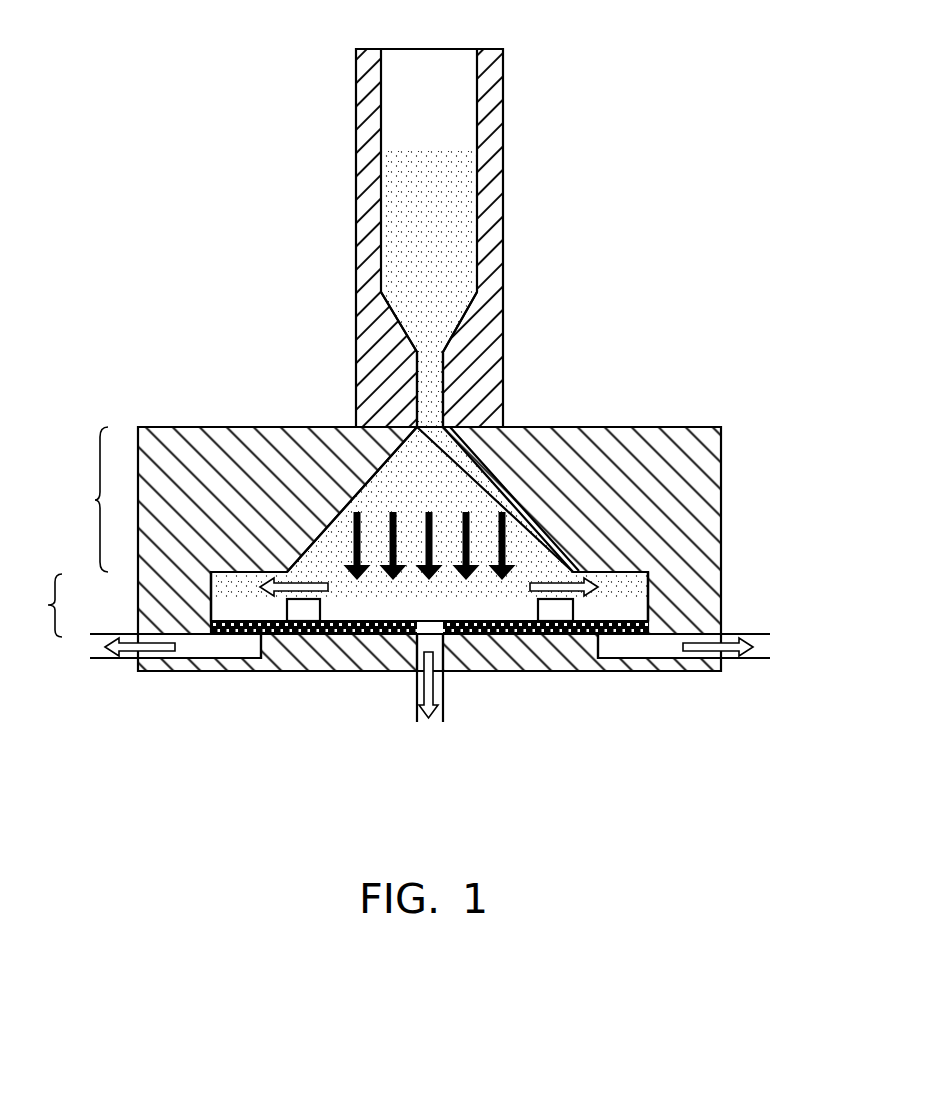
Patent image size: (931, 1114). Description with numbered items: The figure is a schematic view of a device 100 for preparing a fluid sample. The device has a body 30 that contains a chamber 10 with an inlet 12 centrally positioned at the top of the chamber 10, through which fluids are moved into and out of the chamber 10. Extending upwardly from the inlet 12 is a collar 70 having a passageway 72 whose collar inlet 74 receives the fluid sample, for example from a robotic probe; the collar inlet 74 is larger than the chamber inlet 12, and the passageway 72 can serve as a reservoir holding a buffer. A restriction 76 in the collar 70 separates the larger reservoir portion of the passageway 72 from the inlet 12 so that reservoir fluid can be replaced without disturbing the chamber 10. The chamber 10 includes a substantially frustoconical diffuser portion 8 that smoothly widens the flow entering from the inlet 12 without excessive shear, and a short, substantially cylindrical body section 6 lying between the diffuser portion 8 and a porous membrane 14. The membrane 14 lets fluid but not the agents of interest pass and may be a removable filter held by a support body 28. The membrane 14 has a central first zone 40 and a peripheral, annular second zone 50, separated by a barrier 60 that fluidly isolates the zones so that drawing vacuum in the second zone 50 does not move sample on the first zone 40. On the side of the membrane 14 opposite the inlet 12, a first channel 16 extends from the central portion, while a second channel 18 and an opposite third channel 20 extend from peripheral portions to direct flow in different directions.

The device 100 is at (735, 62).
The collar 70 is at (503, 210).
The passageway 72 is at (440, 99).
The collar inlet 74 is at (463, 70).
The restriction 76 is at (430, 359).
The body 30 is at (570, 458).
The inlet 12 is at (424, 440).
The chamber 10 is at (517, 528).
The porous membrane 14 is at (636, 610).
The second zone 50 is at (234, 605).
The barrier 60 is at (300, 612).
The first zone 40 is at (373, 612).
The support body 28 is at (498, 636).
The first channel 16 is at (445, 718).
The third channel 20 is at (119, 660).
The second channel 18 is at (753, 660).
The diffuser portion 8 is at (91, 499).
The body section 6 is at (44, 605).